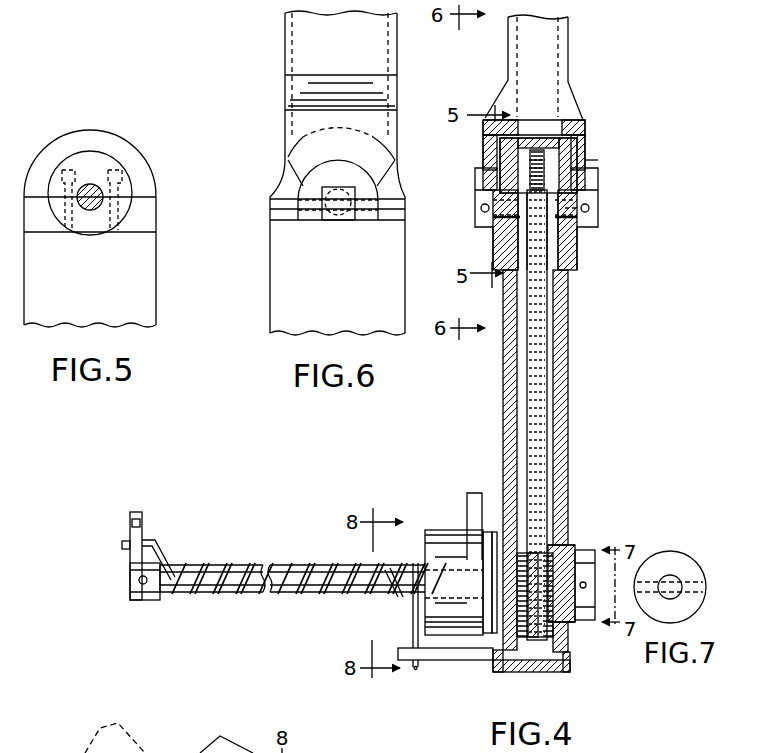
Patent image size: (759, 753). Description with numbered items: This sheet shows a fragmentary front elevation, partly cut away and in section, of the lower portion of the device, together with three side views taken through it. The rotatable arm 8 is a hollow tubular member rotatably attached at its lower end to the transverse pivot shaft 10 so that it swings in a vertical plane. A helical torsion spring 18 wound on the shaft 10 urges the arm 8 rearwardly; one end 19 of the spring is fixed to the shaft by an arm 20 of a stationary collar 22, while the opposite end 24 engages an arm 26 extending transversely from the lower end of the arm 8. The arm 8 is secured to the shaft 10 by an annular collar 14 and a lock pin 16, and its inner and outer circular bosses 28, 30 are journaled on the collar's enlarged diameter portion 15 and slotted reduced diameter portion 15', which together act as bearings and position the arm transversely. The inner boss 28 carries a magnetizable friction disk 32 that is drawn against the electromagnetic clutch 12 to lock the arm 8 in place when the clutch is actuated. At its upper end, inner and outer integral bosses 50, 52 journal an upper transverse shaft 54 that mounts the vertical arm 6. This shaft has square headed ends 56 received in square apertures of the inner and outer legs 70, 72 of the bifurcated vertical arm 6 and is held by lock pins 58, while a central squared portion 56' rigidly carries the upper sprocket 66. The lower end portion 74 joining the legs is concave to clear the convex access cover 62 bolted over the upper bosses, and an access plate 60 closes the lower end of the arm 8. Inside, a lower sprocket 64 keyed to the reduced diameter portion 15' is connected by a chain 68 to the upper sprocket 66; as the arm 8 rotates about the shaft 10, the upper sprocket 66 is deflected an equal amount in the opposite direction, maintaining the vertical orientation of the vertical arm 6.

In FIG. 4, the vertical arm 6 is at (580, 48).
In FIG. 4, the rotatable arm 8 is at (576, 385).
In FIG. 7, the transverse pivot shaft 10 is at (676, 573).
In FIG. 4, the transverse pivot shaft 10 is at (295, 562).
In FIG. 4, the electromagnetic clutch 12 is at (440, 530).
In FIG. 7, the annular collar 14 is at (688, 568).
In FIG. 4, the annular collar 14 is at (595, 552).
In FIG. 4, the enlarged diameter portion 15 is at (587, 561).
In FIG. 4, the slotted reduced diameter portion 15' is at (584, 647).
In FIG. 7, the lock pin 16 is at (695, 578).
In FIG. 4, the lock pin 16 is at (583, 590).
In FIG. 4, the helical torsion spring 18 is at (208, 562).
In FIG. 4, the one end of the spring 19 is at (125, 546).
In FIG. 4, the arm of stationary collar 20 is at (143, 521).
In FIG. 4, the stationary collar 22 is at (130, 572).
In FIG. 4, the opposite end of spring 24 is at (415, 668).
In FIG. 4, the arm 26 is at (462, 656).
In FIG. 4, the inner circular boss 28 is at (496, 535).
In FIG. 4, the outer circular boss 30 is at (565, 548).
In FIG. 4, the magnetizable friction disk 32 is at (470, 525).
In FIG. 4, the inner integral boss 50 is at (495, 243).
In FIG. 4, the outer integral boss 52 is at (577, 250).
In FIG. 4, the upper transverse shaft 54 is at (598, 196).
In FIG. 6, the square headed ends 56 is at (303, 200).
In FIG. 4, the square headed ends 56 is at (544, 203).
In FIG. 4, the central squared portion 56' is at (590, 255).
In FIG. 4, the lock pins 58 is at (486, 212).
In FIG. 4, the access plate 60 is at (540, 673).
In FIG. 5, the convex access cover 62 is at (156, 170).
In FIG. 4, the lower sprocket 64 is at (532, 637).
In FIG. 4, the upper sprocket 66 is at (562, 148).
In FIG. 4, the interconnecting chain 68 is at (545, 328).
In FIG. 4, the inner leg 70 is at (483, 150).
In FIG. 4, the outer leg 72 is at (590, 166).
In FIG. 4, the lower end portion 74 is at (580, 136).